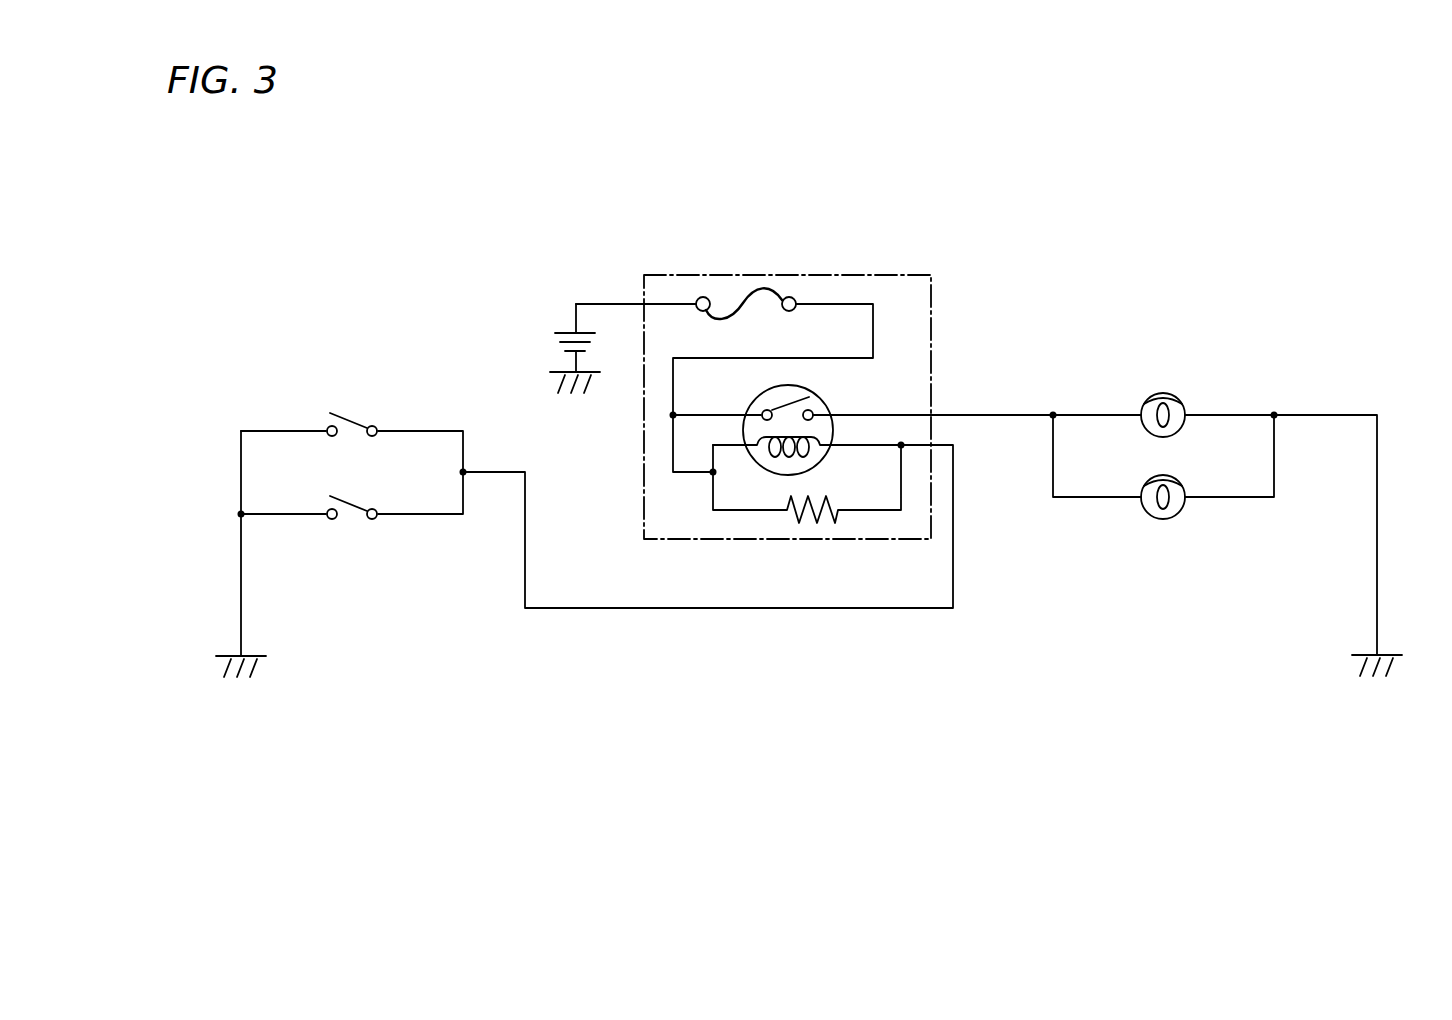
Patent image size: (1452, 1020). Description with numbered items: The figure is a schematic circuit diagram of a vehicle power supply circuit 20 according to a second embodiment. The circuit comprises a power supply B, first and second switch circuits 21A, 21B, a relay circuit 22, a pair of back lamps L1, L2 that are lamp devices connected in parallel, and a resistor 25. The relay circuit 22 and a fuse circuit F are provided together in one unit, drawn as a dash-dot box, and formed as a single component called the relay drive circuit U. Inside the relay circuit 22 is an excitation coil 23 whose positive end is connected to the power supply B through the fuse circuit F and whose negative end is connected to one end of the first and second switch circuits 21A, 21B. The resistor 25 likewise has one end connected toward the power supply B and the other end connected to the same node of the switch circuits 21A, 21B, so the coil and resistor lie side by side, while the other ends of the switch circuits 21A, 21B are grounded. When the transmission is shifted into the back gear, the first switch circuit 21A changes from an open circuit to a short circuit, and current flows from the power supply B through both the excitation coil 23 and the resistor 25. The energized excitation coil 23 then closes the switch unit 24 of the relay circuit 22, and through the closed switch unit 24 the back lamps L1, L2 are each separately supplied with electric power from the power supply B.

The vehicle power supply circuit 20 is at (421, 235).
The first switch circuit 21A is at (352, 420).
The second switch circuit 21B is at (352, 503).
The relay circuit 22 is at (970, 216).
The excitation coil 23 is at (810, 436).
The switch unit 24 is at (788, 403).
The resistor 25 is at (803, 522).
The power supply B is at (566, 331).
The fuse circuit F is at (742, 306).
The relay drive circuit U is at (798, 272).
The back lamp L1 is at (1165, 394).
The back lamp L2 is at (1165, 520).